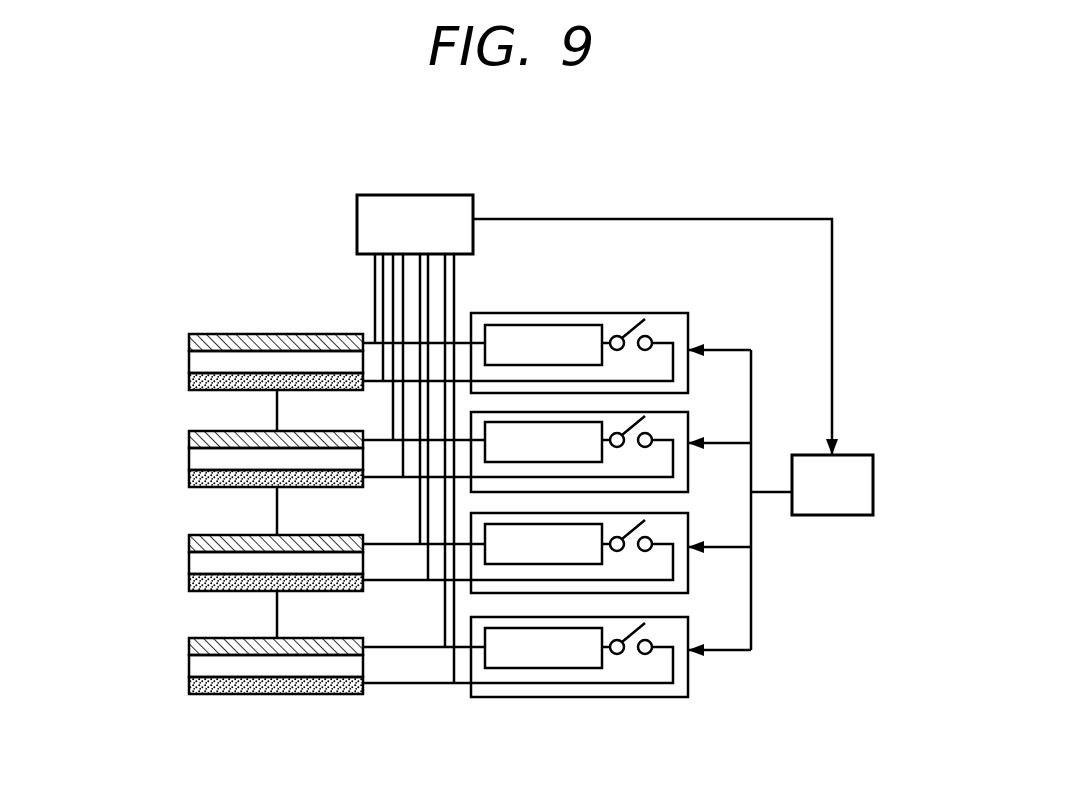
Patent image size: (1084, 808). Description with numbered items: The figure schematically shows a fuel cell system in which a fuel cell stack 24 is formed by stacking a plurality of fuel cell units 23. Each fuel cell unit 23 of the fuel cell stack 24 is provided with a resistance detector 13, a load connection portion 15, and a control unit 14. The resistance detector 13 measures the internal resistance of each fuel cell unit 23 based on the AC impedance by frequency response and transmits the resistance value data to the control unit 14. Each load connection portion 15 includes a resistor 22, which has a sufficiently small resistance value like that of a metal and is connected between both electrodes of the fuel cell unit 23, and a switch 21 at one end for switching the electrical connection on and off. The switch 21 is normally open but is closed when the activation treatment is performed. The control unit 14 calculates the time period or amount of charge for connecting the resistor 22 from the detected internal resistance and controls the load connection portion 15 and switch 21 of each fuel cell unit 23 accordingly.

The resistance detector 13 is at (413, 200).
The control unit 14 is at (862, 455).
The load connection portion 15 is at (678, 325).
The switch 21 is at (630, 328).
The resistor 22 is at (543, 496).
The fuel cell unit 23 is at (276, 323).
The fuel cell stack 24 is at (233, 475).